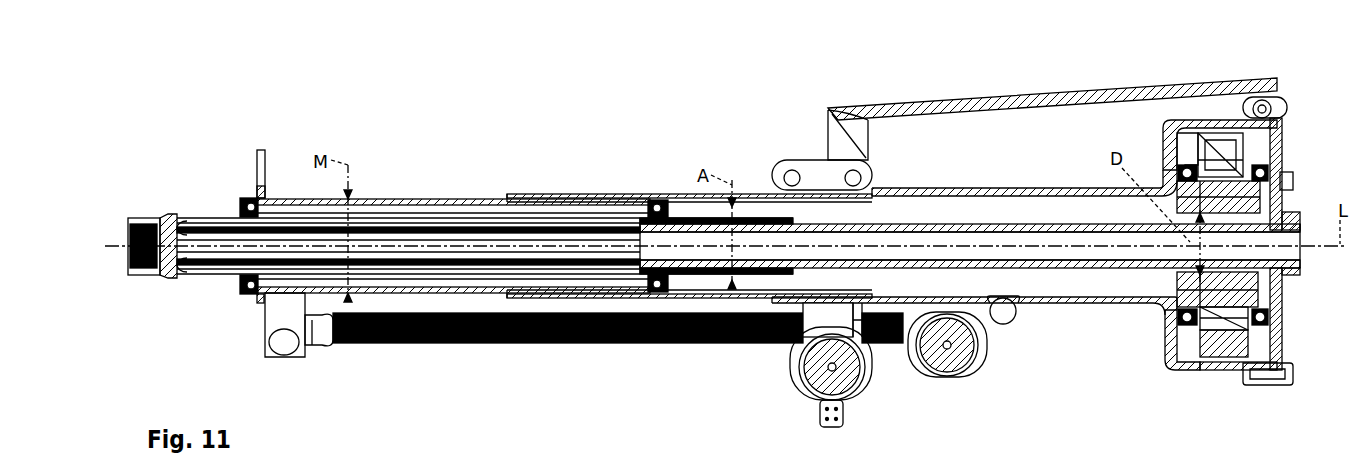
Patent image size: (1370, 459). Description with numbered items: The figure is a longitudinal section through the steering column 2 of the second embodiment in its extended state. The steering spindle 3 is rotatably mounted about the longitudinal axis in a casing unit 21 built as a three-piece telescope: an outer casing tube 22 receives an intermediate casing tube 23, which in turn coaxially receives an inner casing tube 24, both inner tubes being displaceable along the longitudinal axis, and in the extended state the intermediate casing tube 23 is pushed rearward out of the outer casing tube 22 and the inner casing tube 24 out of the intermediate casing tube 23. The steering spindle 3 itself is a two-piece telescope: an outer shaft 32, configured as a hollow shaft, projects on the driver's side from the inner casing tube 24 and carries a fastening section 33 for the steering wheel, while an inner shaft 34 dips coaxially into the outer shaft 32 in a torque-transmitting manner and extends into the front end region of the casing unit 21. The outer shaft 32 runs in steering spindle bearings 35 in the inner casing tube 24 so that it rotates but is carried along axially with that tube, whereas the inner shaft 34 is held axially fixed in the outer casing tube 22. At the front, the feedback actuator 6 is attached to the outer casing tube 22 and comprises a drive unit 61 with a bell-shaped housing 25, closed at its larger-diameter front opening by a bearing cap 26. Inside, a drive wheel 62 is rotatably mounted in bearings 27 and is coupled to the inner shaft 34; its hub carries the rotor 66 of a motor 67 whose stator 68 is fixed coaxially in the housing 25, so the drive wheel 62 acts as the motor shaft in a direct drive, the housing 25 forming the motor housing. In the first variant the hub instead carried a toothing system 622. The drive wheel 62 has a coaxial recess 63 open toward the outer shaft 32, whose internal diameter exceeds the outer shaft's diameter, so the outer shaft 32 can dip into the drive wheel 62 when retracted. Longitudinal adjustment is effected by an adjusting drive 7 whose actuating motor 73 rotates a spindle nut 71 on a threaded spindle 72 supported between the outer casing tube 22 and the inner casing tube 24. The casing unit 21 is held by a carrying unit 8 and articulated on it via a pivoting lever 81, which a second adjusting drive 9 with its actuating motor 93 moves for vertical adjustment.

The steering column 2 is at (578, 97).
The steering spindle 3 is at (768, 208).
The feedback actuator 6 is at (1315, 92).
The adjusting drive 7 is at (781, 373).
The carrying unit 8 is at (1137, 94).
The adjusting drive 9 is at (985, 370).
The casing unit 21 is at (567, 191).
The outer casing tube 22 is at (1025, 187).
The intermediate casing tube 23 is at (645, 198).
The inner casing tube 24 is at (367, 199).
The housing 25 is at (1222, 366).
The bearing cap 26 is at (1288, 177).
The bearings 27 is at (1190, 168).
The outer shaft 32 is at (452, 216).
The fastening section 33 is at (138, 217).
The inner shaft 34 is at (1085, 222).
The steering spindle bearings 35 is at (249, 199).
The drive unit 61 is at (1182, 370).
The drive wheel 62 is at (1234, 197).
The recess 63 is at (1266, 285).
The rotor 66 is at (1276, 88).
The motor 67 is at (1188, 145).
The stator 68 is at (1221, 144).
The spindle nut 71 is at (856, 396).
The threaded spindle 72 is at (595, 344).
The actuating motor 73 is at (805, 391).
The pivoting lever 81 is at (827, 176).
The actuating motor 93 is at (956, 356).
The toothing system 622 is at (1248, 338).